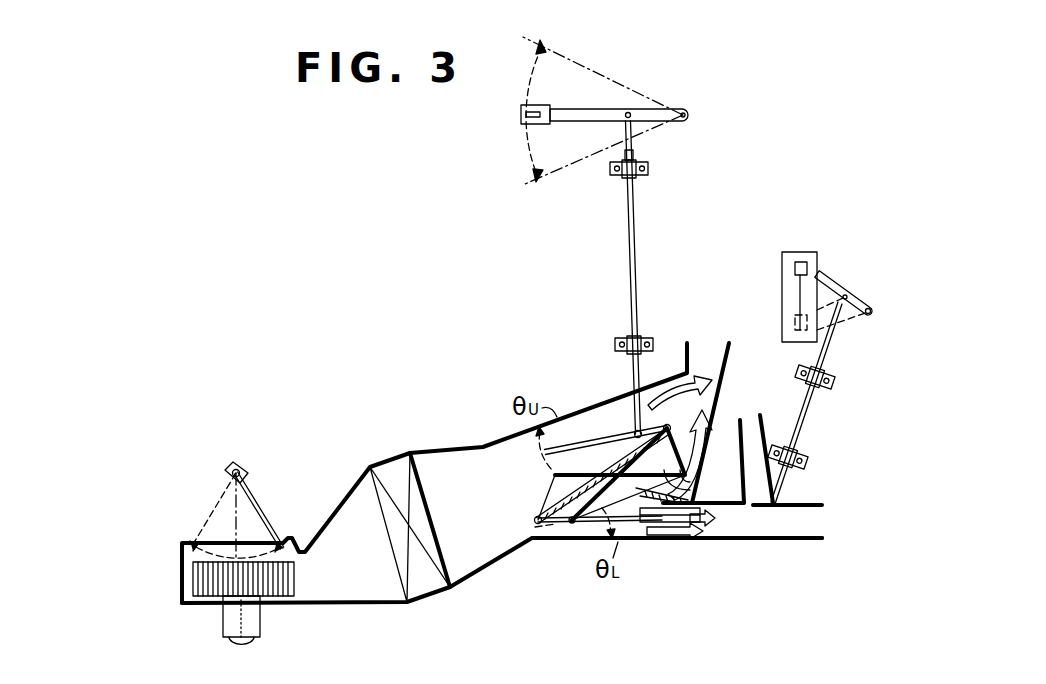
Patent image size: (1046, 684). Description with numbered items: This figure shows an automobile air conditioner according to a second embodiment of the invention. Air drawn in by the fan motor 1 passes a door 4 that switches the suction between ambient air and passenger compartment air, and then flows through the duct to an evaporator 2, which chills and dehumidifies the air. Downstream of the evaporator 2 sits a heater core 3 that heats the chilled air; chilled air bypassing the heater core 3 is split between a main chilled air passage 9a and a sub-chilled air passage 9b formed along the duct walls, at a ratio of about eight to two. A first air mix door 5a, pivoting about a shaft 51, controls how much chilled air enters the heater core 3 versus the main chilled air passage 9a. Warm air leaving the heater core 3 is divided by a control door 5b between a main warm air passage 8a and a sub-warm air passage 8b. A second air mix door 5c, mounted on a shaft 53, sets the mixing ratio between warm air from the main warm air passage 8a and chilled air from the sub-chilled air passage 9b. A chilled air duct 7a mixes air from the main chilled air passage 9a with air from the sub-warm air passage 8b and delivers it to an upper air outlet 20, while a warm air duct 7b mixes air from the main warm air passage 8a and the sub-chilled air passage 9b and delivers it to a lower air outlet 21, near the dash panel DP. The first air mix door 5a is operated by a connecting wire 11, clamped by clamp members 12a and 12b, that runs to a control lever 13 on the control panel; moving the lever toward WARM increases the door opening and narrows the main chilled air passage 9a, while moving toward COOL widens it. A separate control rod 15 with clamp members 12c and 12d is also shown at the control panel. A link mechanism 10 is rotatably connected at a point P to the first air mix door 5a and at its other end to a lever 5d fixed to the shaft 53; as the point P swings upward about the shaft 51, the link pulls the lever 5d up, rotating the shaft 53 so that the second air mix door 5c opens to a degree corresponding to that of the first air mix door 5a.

The fan motor 1 is at (223, 621).
The evaporator 2 is at (425, 590).
The heater core 3 is at (675, 462).
The door 4 is at (265, 512).
The first air mix door 5a is at (580, 448).
The control door 5b is at (710, 523).
The second air mix door 5c is at (640, 535).
The lever 5d is at (548, 527).
The chilled air duct 7a is at (700, 360).
The warm air duct 7b is at (768, 530).
The main warm air passage 8a is at (647, 533).
The sub-warm air passage 8b is at (690, 493).
The main chilled air passage 9a is at (605, 412).
The sub-chilled air passage 9b is at (560, 533).
The link mechanism 10 is at (540, 512).
The connecting wire 11 is at (637, 251).
The clamp member 12a is at (650, 168).
The clamp member 12b is at (640, 333).
The rod guide bracket 12c is at (832, 381).
The rod guide bracket 12d is at (806, 459).
The control lever 13 is at (599, 108).
The mode control rod 15 is at (812, 420).
The upper air outlet 20 is at (720, 347).
The lower air outlet 21 is at (818, 525).
The shaft 51 is at (668, 414).
The shaft 53 is at (575, 525).
The point of connection P is at (636, 430).
The dash panel DP is at (782, 510).